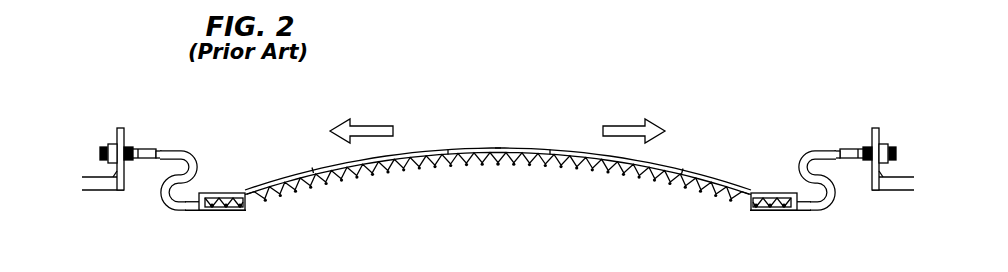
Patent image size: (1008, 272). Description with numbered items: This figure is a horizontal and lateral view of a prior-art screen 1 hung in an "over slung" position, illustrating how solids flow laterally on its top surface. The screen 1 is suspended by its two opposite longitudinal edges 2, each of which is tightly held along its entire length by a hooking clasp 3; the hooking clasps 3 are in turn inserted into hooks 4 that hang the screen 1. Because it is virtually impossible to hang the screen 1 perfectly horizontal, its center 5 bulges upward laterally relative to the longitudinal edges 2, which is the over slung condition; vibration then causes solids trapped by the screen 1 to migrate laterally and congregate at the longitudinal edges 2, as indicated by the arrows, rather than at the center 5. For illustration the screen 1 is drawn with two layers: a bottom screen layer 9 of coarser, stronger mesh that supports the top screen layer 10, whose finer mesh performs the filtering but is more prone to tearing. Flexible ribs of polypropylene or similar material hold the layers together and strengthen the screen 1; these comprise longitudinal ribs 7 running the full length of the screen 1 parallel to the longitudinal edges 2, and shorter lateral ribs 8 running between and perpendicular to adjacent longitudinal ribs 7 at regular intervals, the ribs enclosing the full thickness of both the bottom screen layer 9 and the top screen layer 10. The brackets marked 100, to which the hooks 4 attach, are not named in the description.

The screen 1 is at (365, 200).
The longitudinal edges 2 is at (243, 192).
The hooking clasps 3 is at (193, 211).
The hooks 4 is at (178, 152).
The center 5 is at (498, 148).
The longitudinal ribs 7 is at (448, 153).
The lateral ribs 8 is at (312, 169).
The bottom screen layer 9 is at (498, 166).
The top screen layer 10 is at (683, 172).
The wall bracket 100 is at (92, 190).